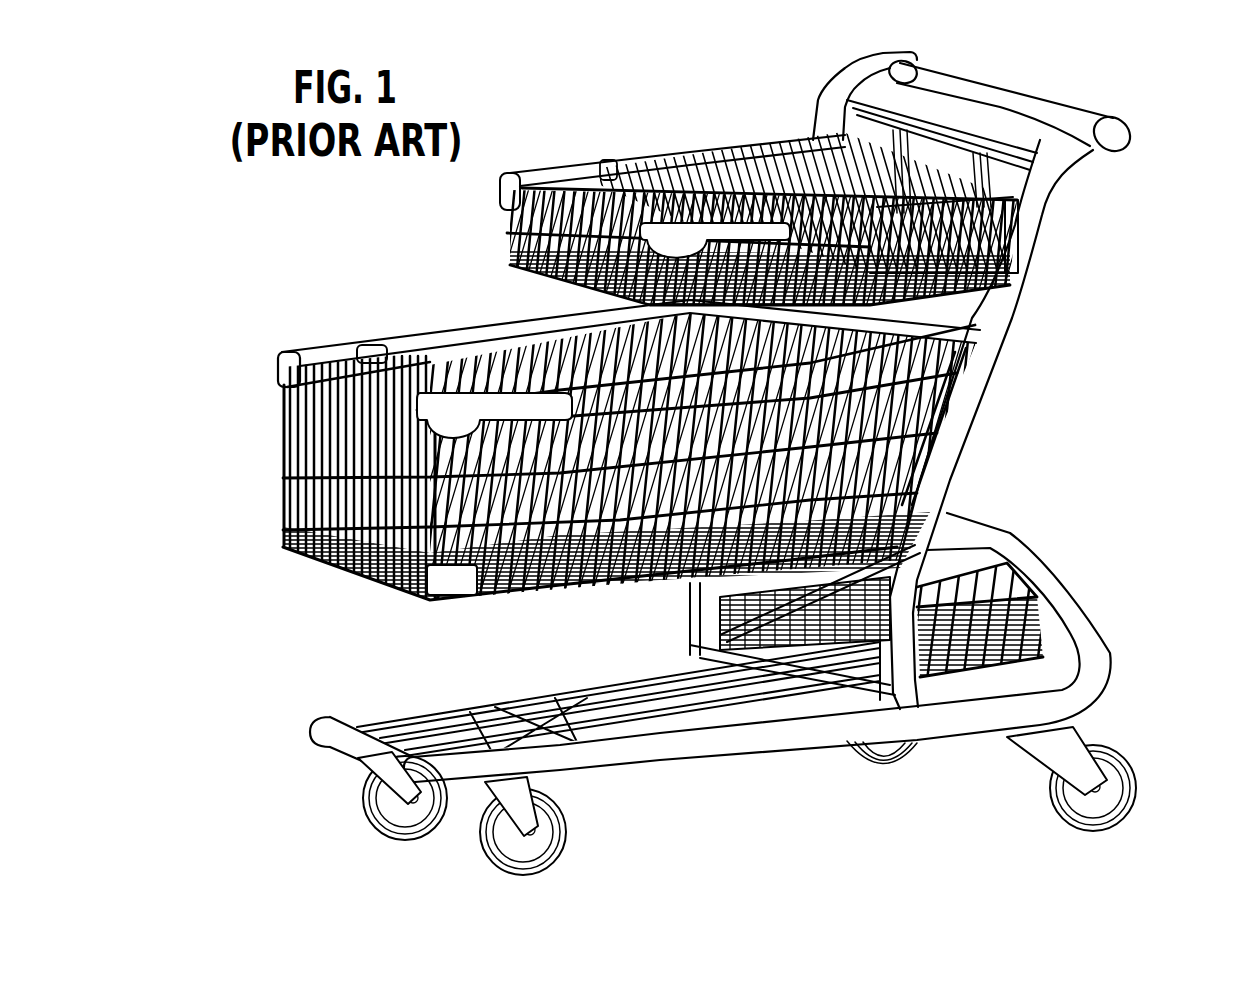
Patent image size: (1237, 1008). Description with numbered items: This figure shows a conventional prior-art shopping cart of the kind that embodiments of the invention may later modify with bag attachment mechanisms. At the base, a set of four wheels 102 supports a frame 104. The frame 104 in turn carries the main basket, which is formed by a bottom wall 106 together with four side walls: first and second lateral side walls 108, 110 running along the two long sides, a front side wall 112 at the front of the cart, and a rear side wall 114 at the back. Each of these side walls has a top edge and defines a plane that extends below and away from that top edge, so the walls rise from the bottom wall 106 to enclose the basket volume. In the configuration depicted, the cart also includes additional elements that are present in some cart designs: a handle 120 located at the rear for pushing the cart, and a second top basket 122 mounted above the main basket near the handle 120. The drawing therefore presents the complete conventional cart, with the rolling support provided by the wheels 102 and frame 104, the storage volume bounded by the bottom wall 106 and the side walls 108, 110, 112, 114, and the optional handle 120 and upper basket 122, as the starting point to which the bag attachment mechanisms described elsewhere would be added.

The wheels 102 is at (363, 811).
The frame 104 is at (1097, 680).
The bottom wall 106 is at (350, 572).
The first lateral side wall 108 is at (880, 465).
The second lateral side wall 110 is at (669, 460).
The front side wall 112 is at (287, 465).
The rear side wall 114 is at (913, 383).
The handle 120 is at (1023, 104).
The second top basket 122 is at (645, 152).